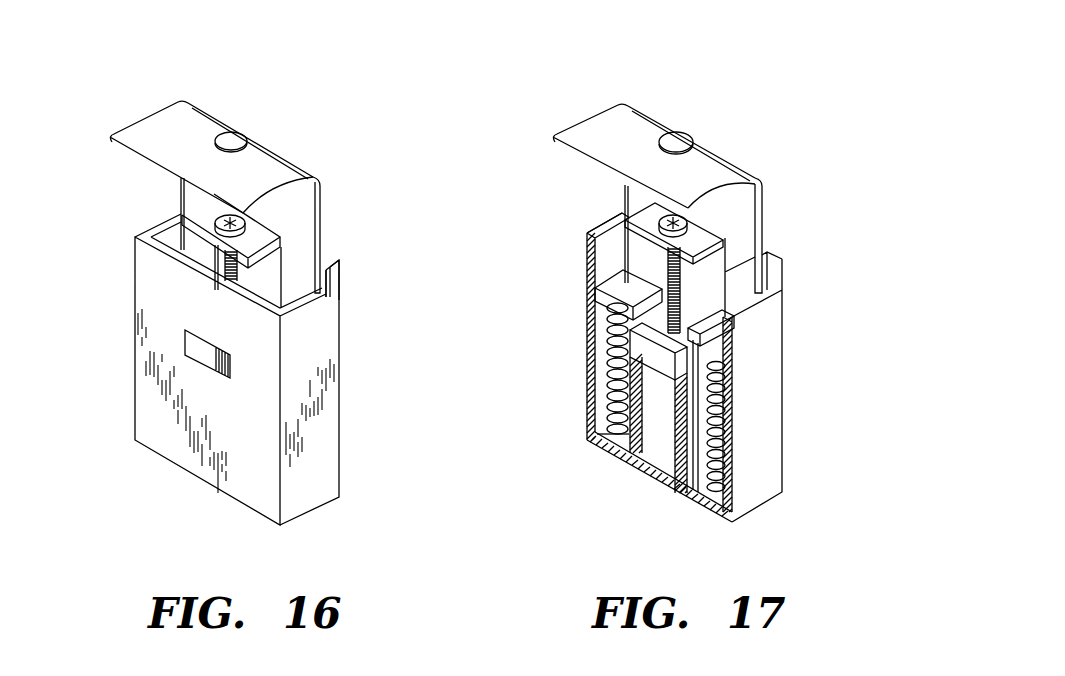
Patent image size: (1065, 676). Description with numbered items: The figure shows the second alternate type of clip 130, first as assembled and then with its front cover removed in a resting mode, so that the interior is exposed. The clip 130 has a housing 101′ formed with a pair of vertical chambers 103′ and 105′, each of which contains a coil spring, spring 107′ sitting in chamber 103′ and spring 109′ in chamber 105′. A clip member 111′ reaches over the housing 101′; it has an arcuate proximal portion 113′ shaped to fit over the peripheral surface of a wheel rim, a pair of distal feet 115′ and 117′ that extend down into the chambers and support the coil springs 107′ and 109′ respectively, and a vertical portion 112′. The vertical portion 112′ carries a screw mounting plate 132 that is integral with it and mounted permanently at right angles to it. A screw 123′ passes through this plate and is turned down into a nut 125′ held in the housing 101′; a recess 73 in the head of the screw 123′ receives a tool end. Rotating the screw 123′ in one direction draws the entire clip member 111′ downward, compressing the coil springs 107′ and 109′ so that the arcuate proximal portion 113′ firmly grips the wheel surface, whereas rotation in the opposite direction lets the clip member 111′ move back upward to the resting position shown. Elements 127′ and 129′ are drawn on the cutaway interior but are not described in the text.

In FIG. 16, the recess 73 is at (234, 133).
In FIG. 17, the recess 73 is at (677, 134).
In FIG. 16, the arcuate proximal portion 113′ is at (247, 173).
In FIG. 17, the arcuate proximal portion 113′ is at (697, 175).
In FIG. 16, the clip member 111′ is at (321, 192).
In FIG. 17, the clip member 111′ is at (764, 195).
In FIG. 16, the screw mounting plate 132 is at (328, 266).
In FIG. 17, the screw mounting plate 132 is at (622, 210).
In FIG. 16, the clip 130 is at (378, 266).
In FIG. 17, the clip 130 is at (800, 215).
In FIG. 16, the screw 123′ is at (182, 214).
In FIG. 17, the screw 123′ is at (728, 258).
In FIG. 16, the nut 125′ is at (185, 337).
In FIG. 17, the nut 125′ is at (605, 428).
In FIG. 16, the housing 101′ is at (338, 322).
In FIG. 17, the distal foot 117′ is at (595, 306).
In FIG. 17, the vertical portion 112′ is at (740, 210).
In FIG. 17, the coil spring 109′ is at (608, 333).
In FIG. 17, the distal foot 115′ is at (712, 346).
In FIG. 17, the vertical chamber 105′ is at (604, 430).
In FIG. 17, the center partition wall 129′ is at (637, 420).
In FIG. 17, the partition wall 127′ is at (680, 433).
In FIG. 17, the vertical chamber 103′ is at (697, 472).
In FIG. 17, the coil spring 107′ is at (733, 440).